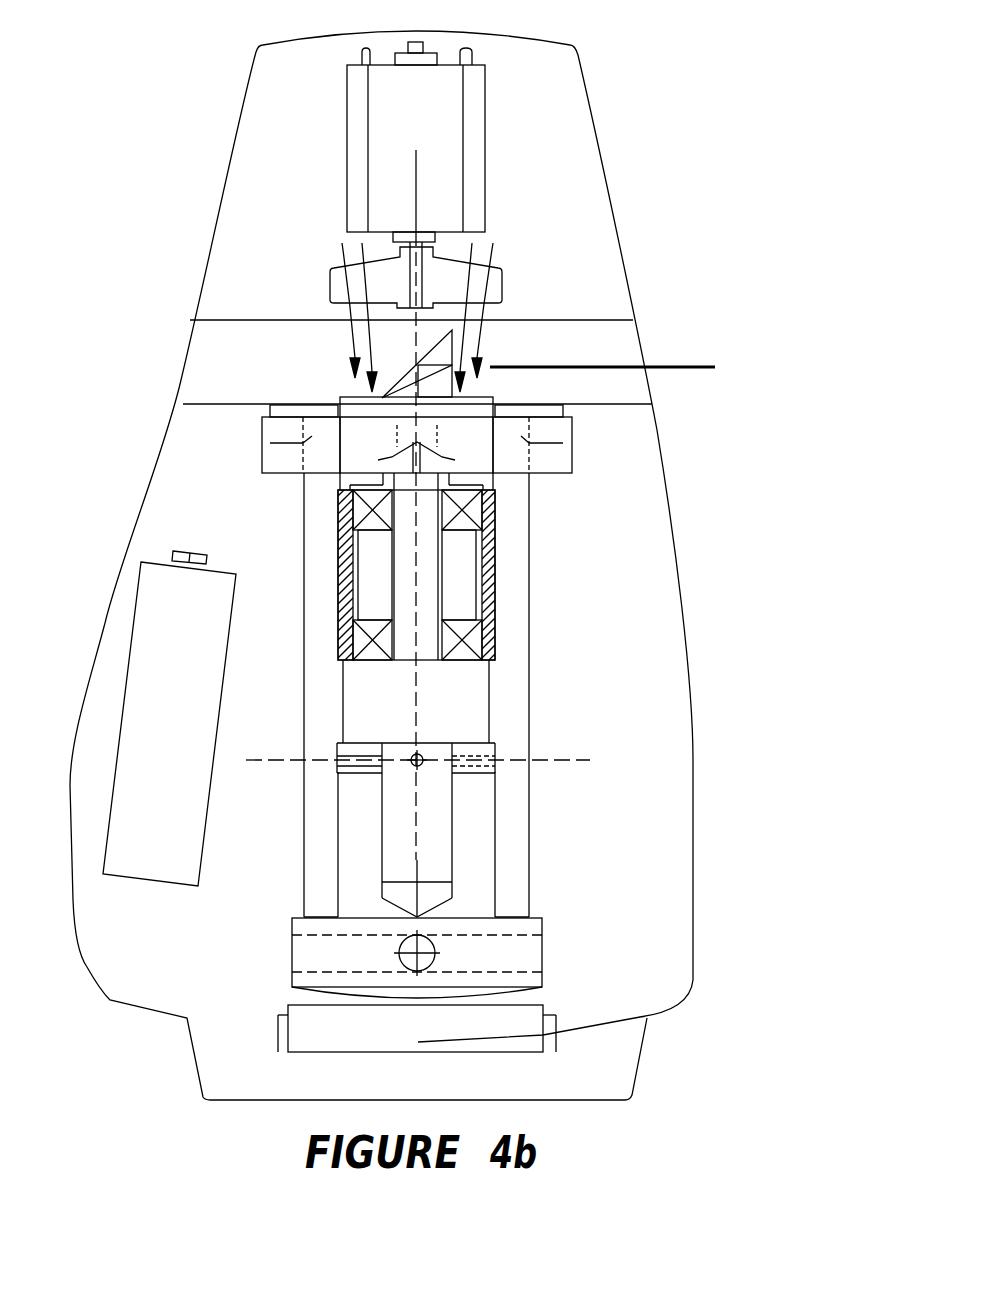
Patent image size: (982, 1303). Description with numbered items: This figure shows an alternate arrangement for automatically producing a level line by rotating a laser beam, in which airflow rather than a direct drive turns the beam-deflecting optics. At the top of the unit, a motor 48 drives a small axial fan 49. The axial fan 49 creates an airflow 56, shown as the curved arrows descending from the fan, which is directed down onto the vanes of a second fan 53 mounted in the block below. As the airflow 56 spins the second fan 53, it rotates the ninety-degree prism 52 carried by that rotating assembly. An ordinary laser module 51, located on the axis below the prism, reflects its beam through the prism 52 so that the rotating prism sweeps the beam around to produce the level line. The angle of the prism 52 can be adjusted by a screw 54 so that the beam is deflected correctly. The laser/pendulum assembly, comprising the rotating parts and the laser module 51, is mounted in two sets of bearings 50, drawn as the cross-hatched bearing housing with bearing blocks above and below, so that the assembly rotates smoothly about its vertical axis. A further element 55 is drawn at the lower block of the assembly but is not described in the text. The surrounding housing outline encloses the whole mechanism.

The motor 48 is at (258, 142).
The axial fan 49 is at (266, 275).
The bearings 50 is at (263, 519).
The laser module 51 is at (229, 635).
The prism 52 is at (526, 305).
The second fan 53 is at (573, 296).
The screw 54 is at (544, 737).
The base block 55 is at (567, 919).
The airflow 56 is at (474, 259).